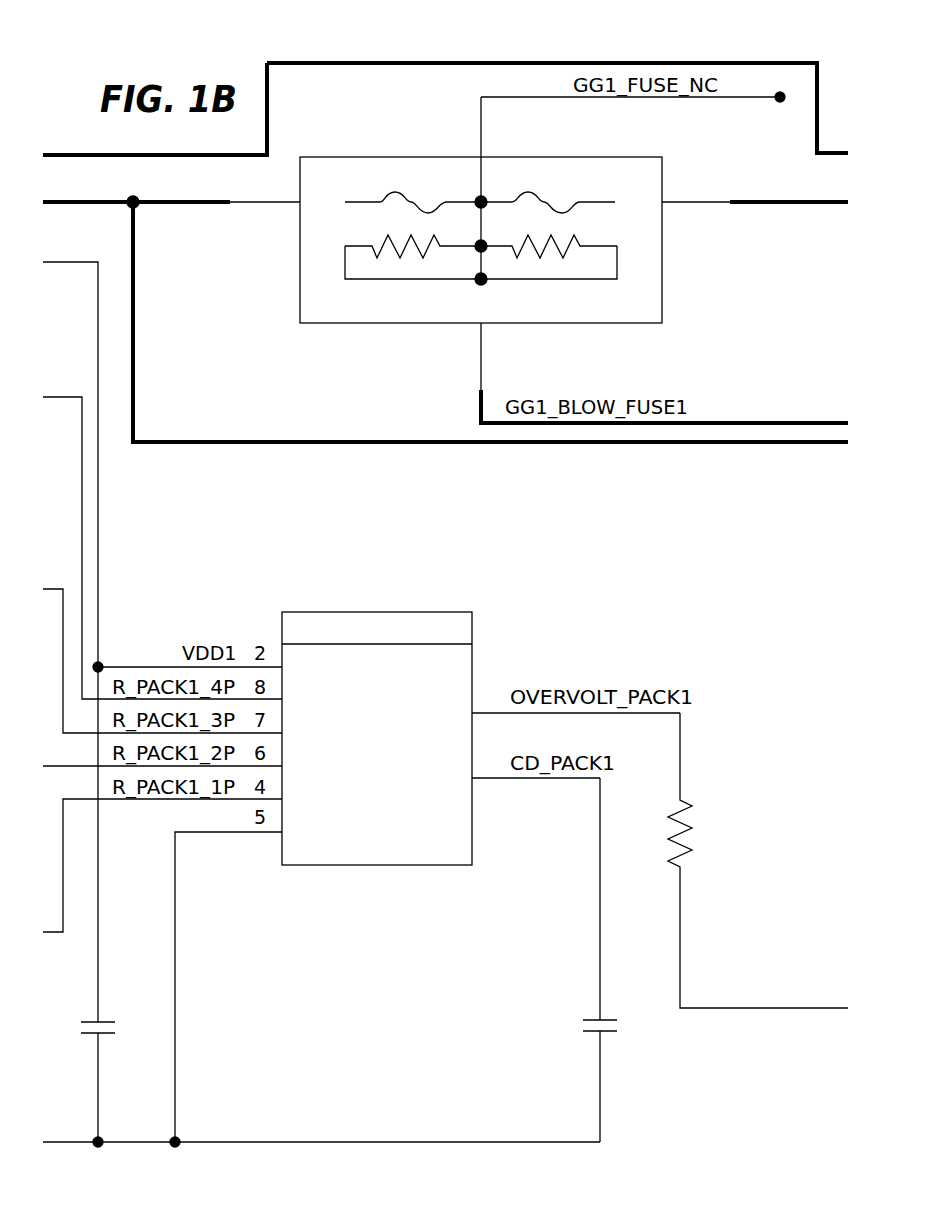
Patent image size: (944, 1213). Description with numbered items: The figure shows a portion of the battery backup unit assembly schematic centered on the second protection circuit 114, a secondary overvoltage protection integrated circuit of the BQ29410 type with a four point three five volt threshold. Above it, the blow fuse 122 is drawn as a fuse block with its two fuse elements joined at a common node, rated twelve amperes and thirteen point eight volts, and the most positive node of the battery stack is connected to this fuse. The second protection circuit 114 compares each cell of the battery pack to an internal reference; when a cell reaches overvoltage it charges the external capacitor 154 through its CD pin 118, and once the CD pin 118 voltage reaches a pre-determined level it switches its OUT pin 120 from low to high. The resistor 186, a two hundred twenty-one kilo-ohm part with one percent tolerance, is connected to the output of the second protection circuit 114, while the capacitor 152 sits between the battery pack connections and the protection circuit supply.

The blow fuse 122 is at (400, 157).
The second protection circuit 114 is at (380, 612).
The OUT pin 120 is at (452, 697).
The CD pin 118 is at (450, 790).
The resistor 186 is at (683, 800).
The capacitor 152 is at (103, 1020).
The external capacitor 154 is at (605, 1020).